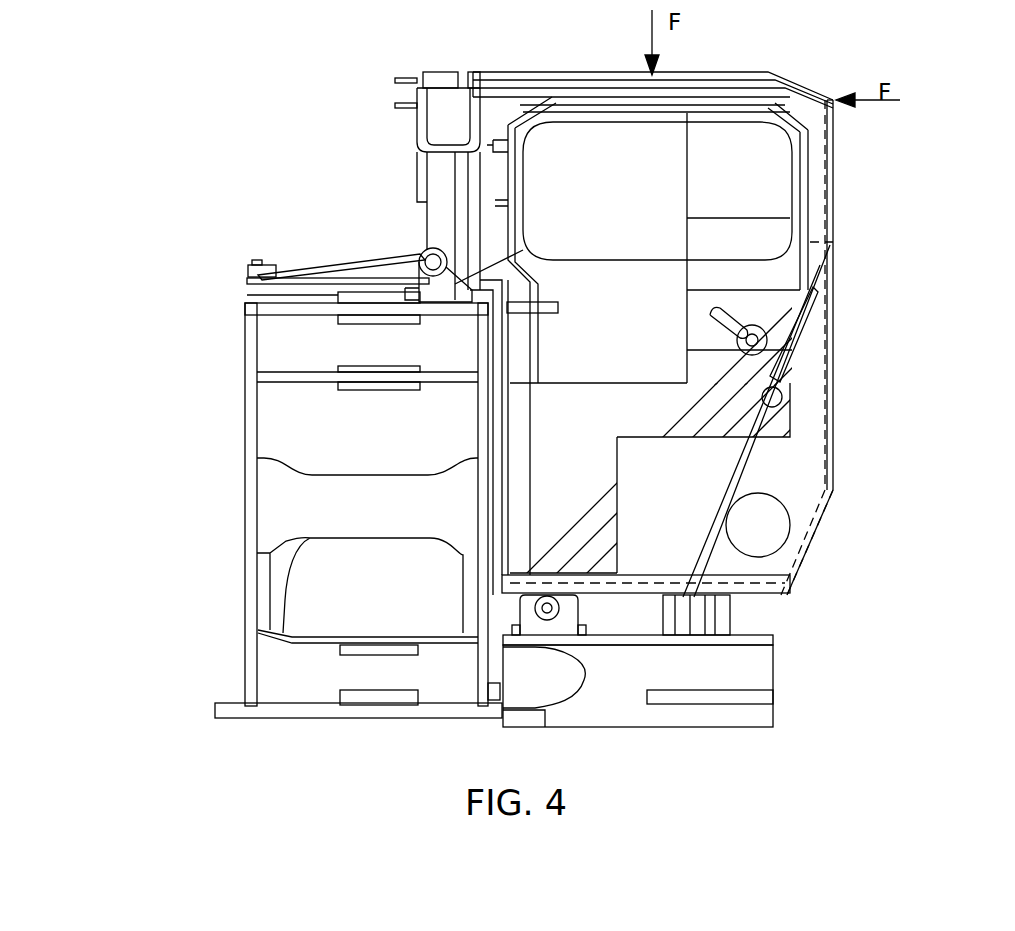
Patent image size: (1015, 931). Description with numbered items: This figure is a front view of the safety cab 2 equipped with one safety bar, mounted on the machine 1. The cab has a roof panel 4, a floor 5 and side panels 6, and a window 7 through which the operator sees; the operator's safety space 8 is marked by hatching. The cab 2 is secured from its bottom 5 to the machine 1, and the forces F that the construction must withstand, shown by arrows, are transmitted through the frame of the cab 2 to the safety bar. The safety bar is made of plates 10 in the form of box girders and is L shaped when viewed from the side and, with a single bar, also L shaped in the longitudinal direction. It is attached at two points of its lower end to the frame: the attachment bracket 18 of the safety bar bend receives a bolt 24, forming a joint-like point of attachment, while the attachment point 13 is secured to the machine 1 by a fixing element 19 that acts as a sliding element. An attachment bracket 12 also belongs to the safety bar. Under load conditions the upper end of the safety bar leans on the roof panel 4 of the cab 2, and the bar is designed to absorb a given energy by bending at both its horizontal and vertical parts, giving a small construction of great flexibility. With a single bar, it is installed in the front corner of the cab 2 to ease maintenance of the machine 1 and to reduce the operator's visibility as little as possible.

The machine 1 is at (203, 397).
The safety cab 2 is at (914, 492).
The roof panel 4 is at (720, 77).
The floor 5 is at (760, 583).
The side panels 6 is at (832, 373).
The window 7 is at (595, 148).
The safety space 8 is at (773, 197).
The plates 10 is at (412, 195).
The attachment bracket 12 is at (407, 77).
The attachment point 13 is at (278, 273).
The attachment bracket of the safety bar bend 18 is at (523, 250).
The fixing element 19 is at (248, 270).
The bolt 24 is at (413, 252).